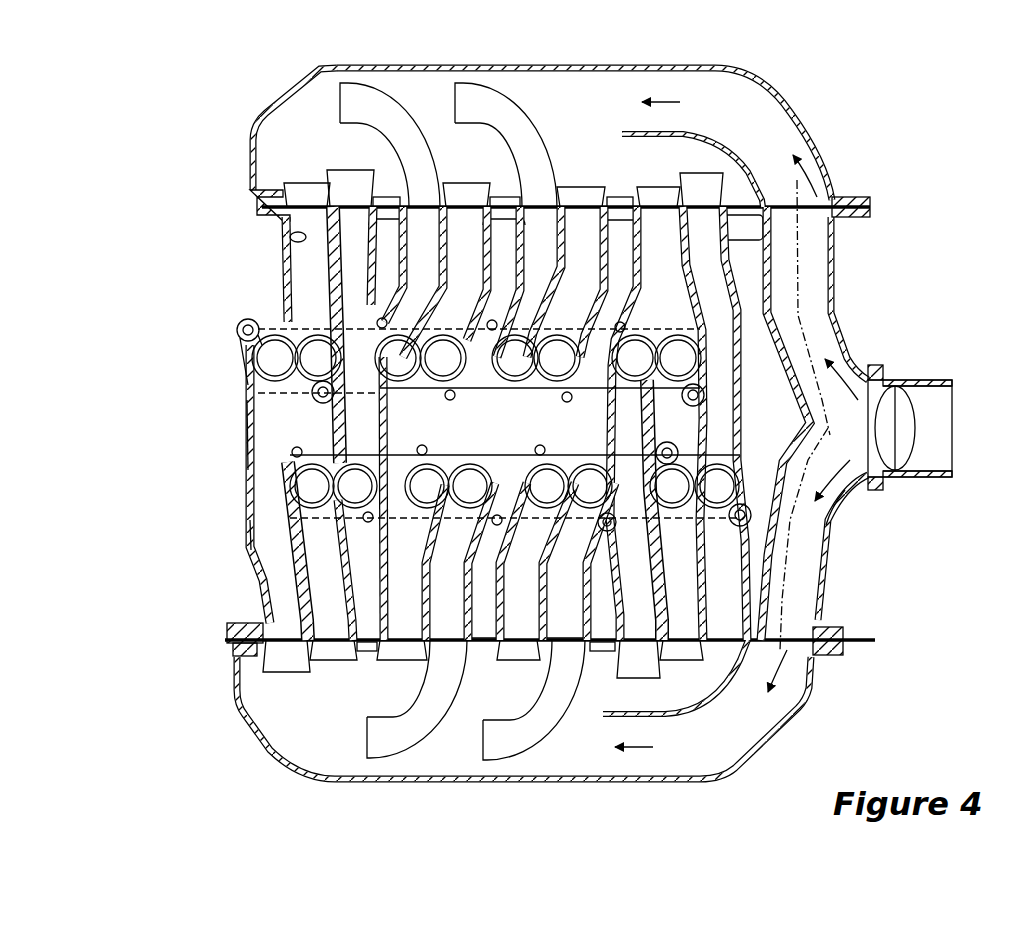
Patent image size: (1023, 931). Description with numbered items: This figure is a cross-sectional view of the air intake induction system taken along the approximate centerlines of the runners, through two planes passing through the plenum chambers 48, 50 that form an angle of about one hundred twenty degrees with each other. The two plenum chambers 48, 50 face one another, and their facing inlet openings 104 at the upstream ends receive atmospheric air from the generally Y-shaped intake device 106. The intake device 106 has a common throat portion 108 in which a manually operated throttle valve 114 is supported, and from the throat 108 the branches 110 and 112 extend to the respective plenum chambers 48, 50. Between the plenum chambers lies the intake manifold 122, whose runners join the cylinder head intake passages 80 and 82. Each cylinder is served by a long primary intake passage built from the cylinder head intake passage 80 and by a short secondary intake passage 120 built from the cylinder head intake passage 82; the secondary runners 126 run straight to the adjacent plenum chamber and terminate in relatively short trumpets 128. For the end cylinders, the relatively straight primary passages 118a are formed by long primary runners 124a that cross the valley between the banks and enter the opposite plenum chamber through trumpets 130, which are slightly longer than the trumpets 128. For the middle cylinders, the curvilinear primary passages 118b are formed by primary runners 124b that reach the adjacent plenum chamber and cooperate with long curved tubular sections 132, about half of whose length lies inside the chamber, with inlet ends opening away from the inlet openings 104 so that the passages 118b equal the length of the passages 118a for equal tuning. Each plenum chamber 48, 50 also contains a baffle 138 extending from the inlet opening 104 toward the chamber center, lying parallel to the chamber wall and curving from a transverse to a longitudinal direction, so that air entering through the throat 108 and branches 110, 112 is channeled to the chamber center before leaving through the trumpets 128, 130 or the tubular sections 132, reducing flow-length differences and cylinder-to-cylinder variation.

The plenum chamber 48 is at (514, 63).
The plenum chamber 50 is at (472, 784).
The intake passage 80 is at (250, 387).
The intake passage 82 is at (300, 330).
The inlet opening 104 is at (836, 232).
The intake device 106 is at (846, 503).
The throat portion 108 is at (935, 472).
The branch 110 is at (838, 272).
The branch 112 is at (822, 568).
The throttle valve 114 is at (912, 406).
The primary intake passage 118a is at (262, 483).
The primary intake passage 118b is at (380, 103).
The secondary intake passage 120 is at (302, 273).
The intake manifold 122 is at (244, 427).
The primary runner 124a is at (257, 543).
The primary runner 124b is at (443, 237).
The secondary runner 126 is at (300, 240).
The trumpet 128 is at (290, 185).
The trumpet 130 is at (348, 183).
The tubular section 132 is at (403, 107).
The baffle 138 is at (680, 133).